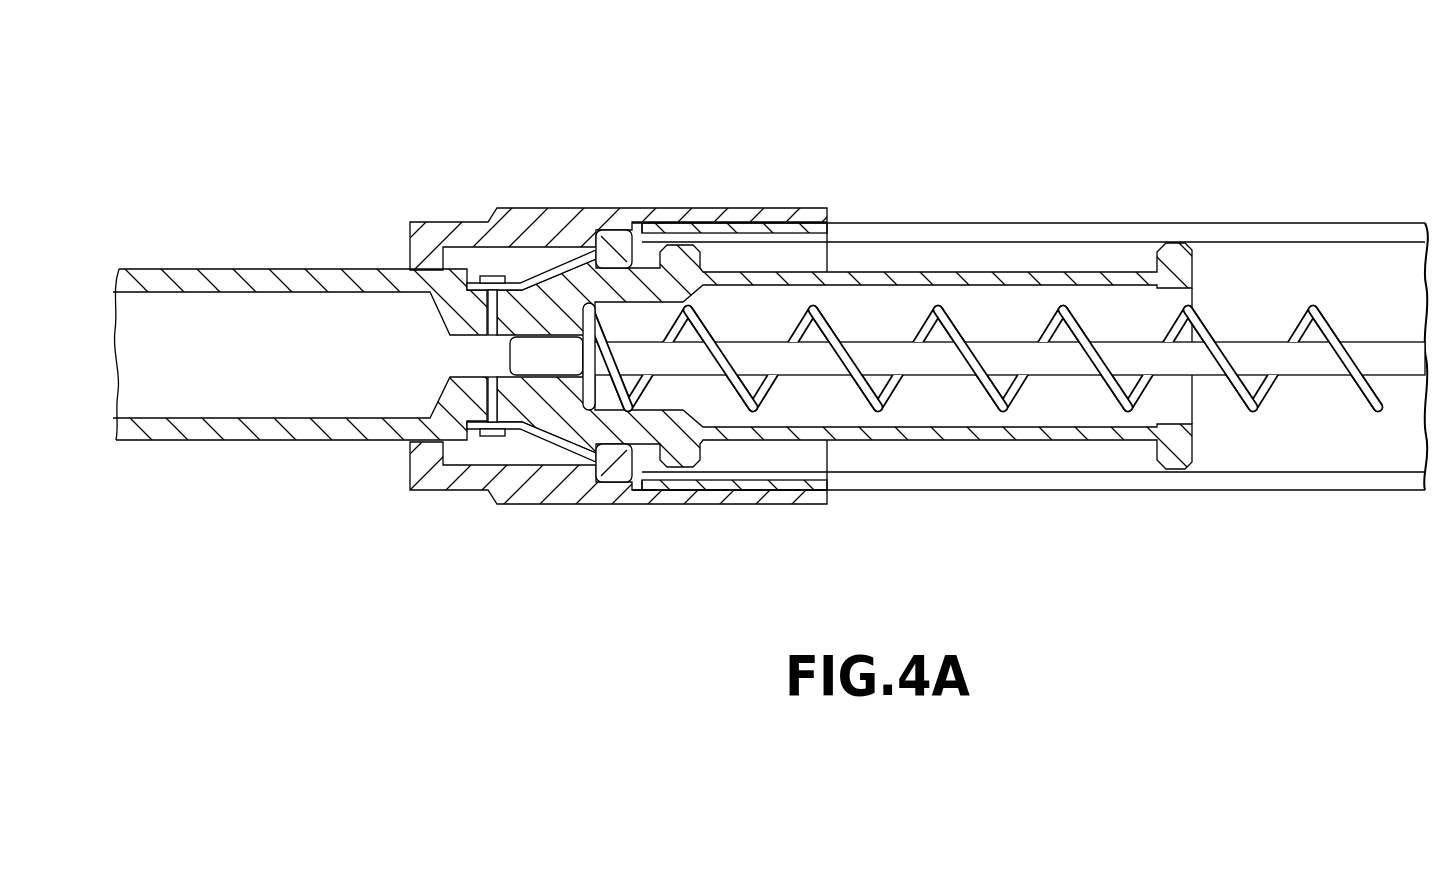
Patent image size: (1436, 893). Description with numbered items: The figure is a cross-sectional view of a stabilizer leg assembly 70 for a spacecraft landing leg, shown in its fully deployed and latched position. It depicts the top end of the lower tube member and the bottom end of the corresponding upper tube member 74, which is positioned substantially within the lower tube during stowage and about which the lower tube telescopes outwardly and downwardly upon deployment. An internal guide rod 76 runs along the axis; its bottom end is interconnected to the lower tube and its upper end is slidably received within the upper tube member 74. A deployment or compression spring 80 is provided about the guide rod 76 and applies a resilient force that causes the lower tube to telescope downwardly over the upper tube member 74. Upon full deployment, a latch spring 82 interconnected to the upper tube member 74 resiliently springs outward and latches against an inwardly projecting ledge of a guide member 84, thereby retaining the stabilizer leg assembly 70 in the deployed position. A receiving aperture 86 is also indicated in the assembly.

The stabilizer leg assembly 70 is at (806, 138).
The upper tube member 74 is at (327, 269).
The internal guide rod 76 is at (1249, 350).
The compression spring 80 is at (890, 393).
The latch spring 82 is at (553, 443).
The guide member 84 is at (457, 488).
The receiving aperture 86 is at (617, 470).